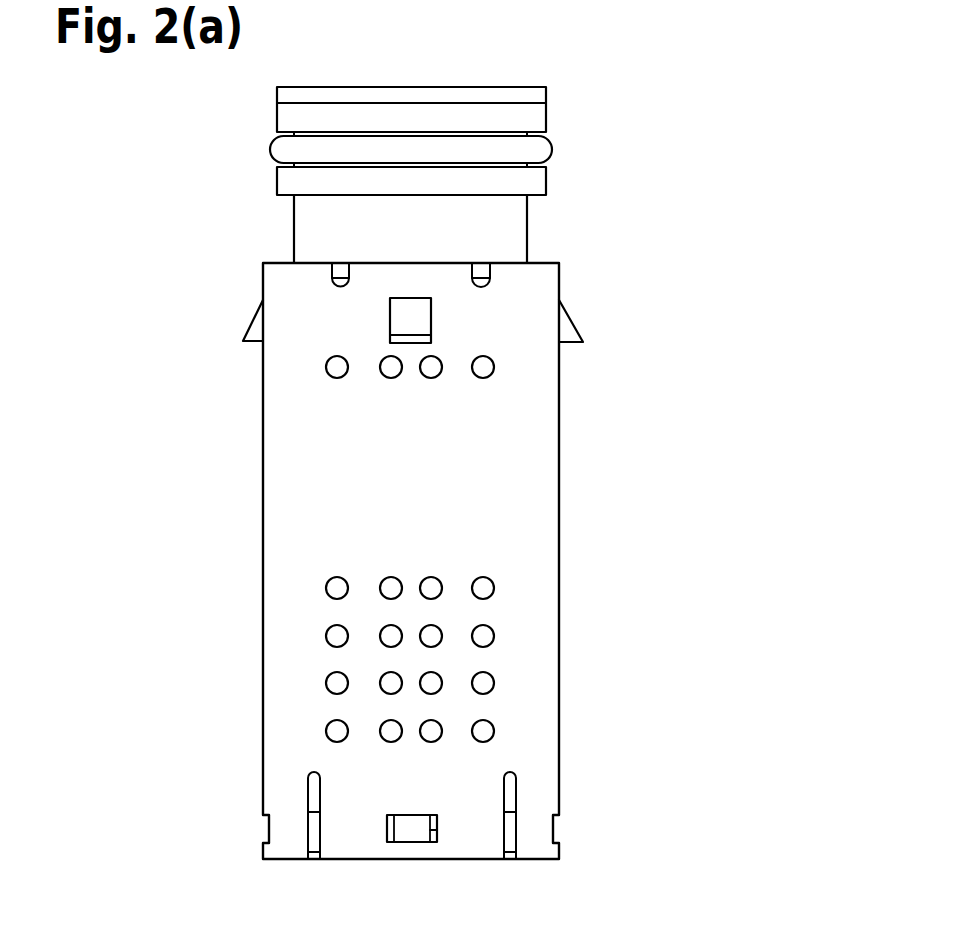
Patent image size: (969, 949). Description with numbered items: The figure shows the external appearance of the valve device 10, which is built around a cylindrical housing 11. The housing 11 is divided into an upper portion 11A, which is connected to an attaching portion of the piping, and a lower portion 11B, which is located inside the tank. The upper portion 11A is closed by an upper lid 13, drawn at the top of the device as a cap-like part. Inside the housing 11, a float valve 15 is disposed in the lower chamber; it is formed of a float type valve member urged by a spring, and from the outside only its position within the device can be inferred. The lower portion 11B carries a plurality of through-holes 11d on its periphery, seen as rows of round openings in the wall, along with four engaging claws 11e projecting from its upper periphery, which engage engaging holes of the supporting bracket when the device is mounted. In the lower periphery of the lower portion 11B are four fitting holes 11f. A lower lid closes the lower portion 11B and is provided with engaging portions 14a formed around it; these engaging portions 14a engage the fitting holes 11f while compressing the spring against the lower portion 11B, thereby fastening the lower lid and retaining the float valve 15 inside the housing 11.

The valve device 10 is at (582, 685).
The cylindrical housing 11 is at (124, 422).
The upper portion 11A is at (300, 233).
The lower portion 11B is at (273, 468).
The through-holes 11d is at (490, 375).
The engaging claws 11e is at (570, 332).
The fitting holes 11f is at (428, 838).
The upper lid 13 is at (278, 94).
The engaging portions 14a is at (404, 832).
The float valve 15 is at (552, 152).